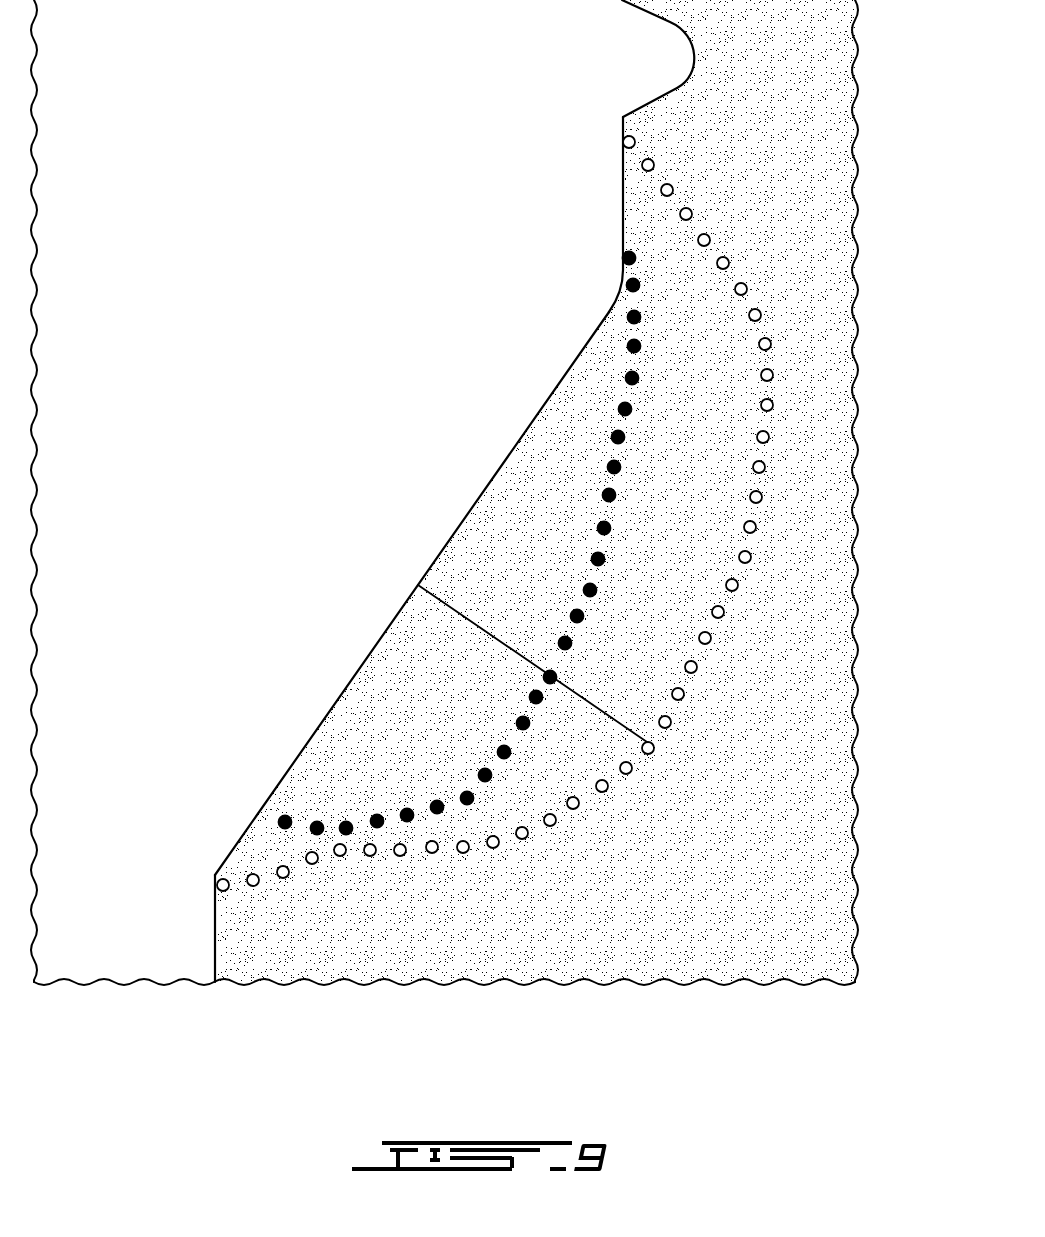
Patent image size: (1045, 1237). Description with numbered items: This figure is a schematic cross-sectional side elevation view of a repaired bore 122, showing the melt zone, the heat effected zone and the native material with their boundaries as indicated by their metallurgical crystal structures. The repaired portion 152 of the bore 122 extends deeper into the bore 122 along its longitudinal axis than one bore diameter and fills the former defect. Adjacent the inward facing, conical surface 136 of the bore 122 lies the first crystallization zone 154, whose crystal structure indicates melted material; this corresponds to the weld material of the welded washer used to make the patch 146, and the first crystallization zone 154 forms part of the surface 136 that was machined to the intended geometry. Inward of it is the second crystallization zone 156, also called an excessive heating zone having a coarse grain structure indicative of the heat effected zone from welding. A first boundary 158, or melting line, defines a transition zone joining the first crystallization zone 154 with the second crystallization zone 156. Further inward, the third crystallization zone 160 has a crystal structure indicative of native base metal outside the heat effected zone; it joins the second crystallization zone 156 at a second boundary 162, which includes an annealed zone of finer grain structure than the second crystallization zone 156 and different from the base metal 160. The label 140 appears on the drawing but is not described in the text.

The bore 122 is at (166, 491).
The wall 140 is at (248, 83).
The surface 136 is at (340, 697).
The patch 146 is at (520, 570).
The first crystallization zone 154 is at (551, 215).
The repaired portion 152 is at (528, 903).
The second crystallization zone 156 is at (670, 567).
The first boundary 158 is at (626, 437).
The third crystallization zone 160 is at (760, 745).
The second boundary 162 is at (606, 787).